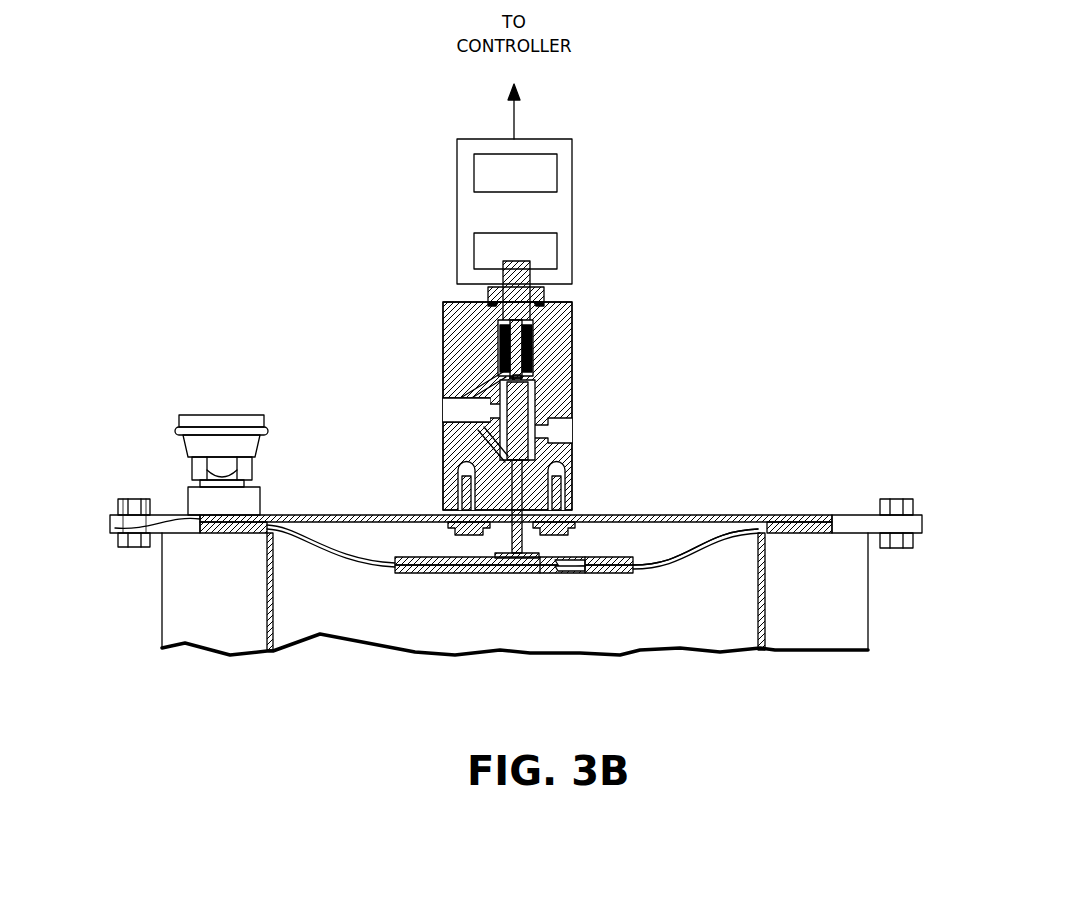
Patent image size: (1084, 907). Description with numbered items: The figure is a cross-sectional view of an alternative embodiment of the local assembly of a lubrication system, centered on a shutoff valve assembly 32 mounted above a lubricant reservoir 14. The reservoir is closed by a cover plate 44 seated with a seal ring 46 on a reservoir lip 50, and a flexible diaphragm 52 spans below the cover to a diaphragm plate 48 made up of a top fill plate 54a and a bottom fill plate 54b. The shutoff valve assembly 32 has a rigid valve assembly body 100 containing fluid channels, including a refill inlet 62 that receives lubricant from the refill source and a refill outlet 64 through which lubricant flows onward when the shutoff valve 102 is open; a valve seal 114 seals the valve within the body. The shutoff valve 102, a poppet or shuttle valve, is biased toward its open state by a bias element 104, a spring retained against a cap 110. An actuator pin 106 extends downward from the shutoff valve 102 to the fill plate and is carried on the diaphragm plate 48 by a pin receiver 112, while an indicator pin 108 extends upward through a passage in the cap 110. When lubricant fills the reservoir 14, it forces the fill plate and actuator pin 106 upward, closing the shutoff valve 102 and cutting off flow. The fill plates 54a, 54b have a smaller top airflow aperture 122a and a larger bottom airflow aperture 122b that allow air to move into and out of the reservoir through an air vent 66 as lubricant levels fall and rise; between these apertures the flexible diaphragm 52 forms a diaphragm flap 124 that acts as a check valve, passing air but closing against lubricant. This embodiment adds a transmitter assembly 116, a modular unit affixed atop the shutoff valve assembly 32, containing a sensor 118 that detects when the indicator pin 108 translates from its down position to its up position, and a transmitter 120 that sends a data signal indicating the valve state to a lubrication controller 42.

The lubricant reservoir 14 is at (212, 632).
The shutoff valve assembly 32 is at (568, 350).
The lubrication controller 42 is at (514, 101).
The cover plate 44 is at (697, 515).
The seal ring 46 is at (110, 525).
The diaphragm plate 48 is at (345, 568).
The reservoir lip 50 is at (210, 533).
The flexible diaphragm 52 is at (692, 558).
The top fill plate 54a is at (590, 565).
The bottom fill plate 54b is at (553, 574).
The refill inlet 62 is at (560, 433).
The refill outlet 64 is at (455, 419).
The air vent 66 is at (209, 415).
The valve assembly body 100 is at (560, 392).
The shutoff valve 102 is at (462, 404).
The bias element 104 is at (502, 345).
The actuator pin 106 is at (496, 558).
The indicator pin 108 is at (518, 262).
The cap 110 is at (488, 290).
The pin receiver 112 is at (527, 558).
The valve seal 114 is at (468, 492).
The transmitter assembly 116 is at (565, 172).
The sensor 118 is at (490, 248).
The transmitter 120 is at (490, 172).
The top airflow aperture 122a is at (563, 572).
The bottom airflow aperture 122b is at (585, 574).
The diaphragm flap 124 is at (563, 574).